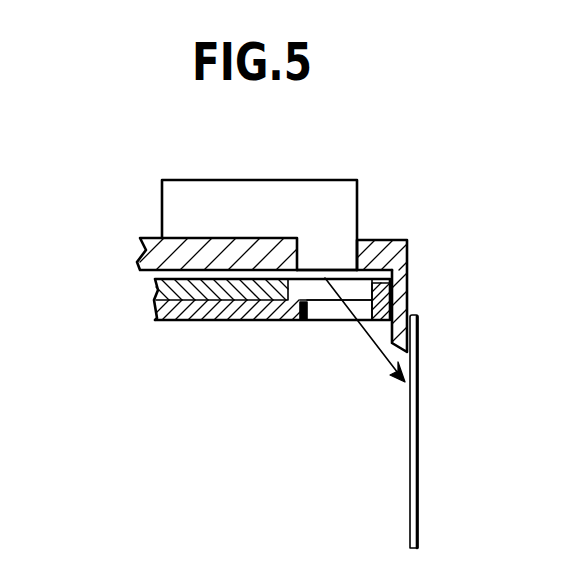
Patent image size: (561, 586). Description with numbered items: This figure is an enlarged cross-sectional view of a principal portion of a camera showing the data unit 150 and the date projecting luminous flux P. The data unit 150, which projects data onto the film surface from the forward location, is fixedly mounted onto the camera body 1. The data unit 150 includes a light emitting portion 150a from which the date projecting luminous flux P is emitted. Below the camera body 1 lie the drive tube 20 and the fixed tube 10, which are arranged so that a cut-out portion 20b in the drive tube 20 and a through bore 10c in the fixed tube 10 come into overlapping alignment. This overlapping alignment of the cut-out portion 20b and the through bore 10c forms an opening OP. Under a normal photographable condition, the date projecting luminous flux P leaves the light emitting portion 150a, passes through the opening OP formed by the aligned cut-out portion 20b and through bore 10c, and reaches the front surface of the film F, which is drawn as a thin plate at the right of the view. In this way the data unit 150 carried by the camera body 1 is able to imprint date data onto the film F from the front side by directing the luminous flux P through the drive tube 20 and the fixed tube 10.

The camera body 1 is at (397, 255).
The data unit 150 is at (343, 193).
The light emitting portion 150a is at (330, 256).
The drive tube 20 is at (157, 290).
The cut-out portion 20b is at (311, 289).
The fixed tube 10 is at (399, 305).
The through bore 10c is at (340, 311).
The opening OP is at (320, 323).
The date projecting luminous flux P is at (373, 345).
The film F is at (413, 455).